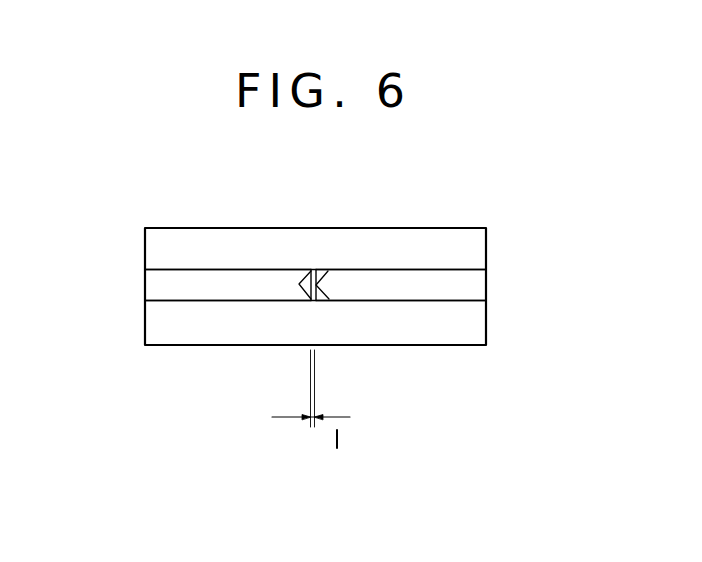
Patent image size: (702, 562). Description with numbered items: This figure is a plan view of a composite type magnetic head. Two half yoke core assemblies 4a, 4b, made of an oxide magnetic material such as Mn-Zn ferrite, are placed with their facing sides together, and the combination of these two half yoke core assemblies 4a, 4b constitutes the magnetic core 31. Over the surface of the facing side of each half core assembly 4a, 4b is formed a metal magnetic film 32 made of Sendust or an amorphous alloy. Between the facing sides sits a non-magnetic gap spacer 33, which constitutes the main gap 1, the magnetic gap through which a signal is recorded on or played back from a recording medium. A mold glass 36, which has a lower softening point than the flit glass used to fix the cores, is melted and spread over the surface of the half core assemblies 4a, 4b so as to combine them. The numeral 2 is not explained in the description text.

The main gap 1 is at (320, 269).
The substrate 2 is at (302, 300).
The half yoke core assembly 4a is at (162, 285).
The half yoke core assembly 4b is at (470, 285).
The magnetic core 31 is at (425, 277).
The metal magnetic film 32 is at (306, 292).
The non-magnetic gap spacer 33 is at (304, 269).
The mold glass 36 is at (352, 246).